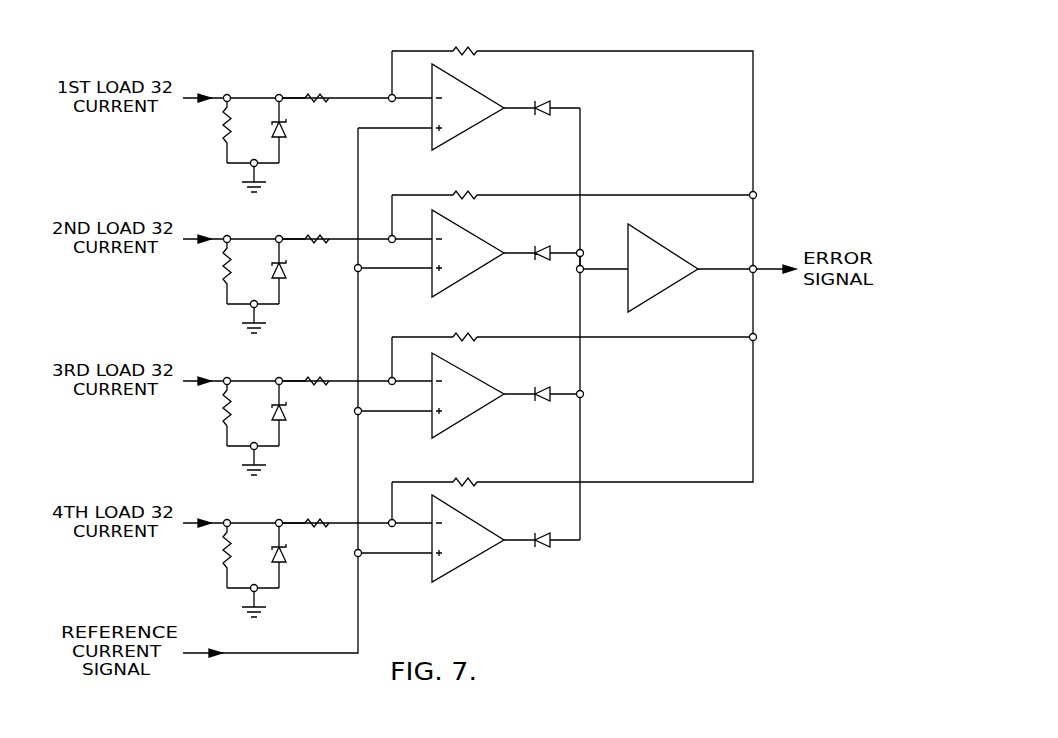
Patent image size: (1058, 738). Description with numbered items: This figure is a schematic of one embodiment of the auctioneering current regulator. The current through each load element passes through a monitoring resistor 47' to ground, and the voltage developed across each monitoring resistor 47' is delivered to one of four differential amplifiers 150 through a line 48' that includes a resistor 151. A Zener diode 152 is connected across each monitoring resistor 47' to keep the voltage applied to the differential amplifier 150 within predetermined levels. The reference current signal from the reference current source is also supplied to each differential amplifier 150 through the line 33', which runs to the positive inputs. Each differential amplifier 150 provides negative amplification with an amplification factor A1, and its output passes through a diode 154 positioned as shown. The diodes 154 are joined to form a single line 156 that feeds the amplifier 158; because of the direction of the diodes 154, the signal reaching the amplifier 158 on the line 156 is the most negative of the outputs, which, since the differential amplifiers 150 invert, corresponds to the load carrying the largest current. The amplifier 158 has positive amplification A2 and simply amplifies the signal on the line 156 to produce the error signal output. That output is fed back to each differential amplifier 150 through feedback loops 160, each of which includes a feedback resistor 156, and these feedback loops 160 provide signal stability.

The line 33' is at (293, 392).
The monitoring resistor 47' is at (241, 343).
The line 48' is at (283, 294).
The resistor 151 is at (327, 95).
The Zener diode 152 is at (288, 127).
The differential amplifier 150 is at (478, 92).
The diode 154 is at (541, 100).
The line 156 is at (460, 46).
The amplifier 158 is at (655, 241).
The feedback loop 160 is at (663, 50).